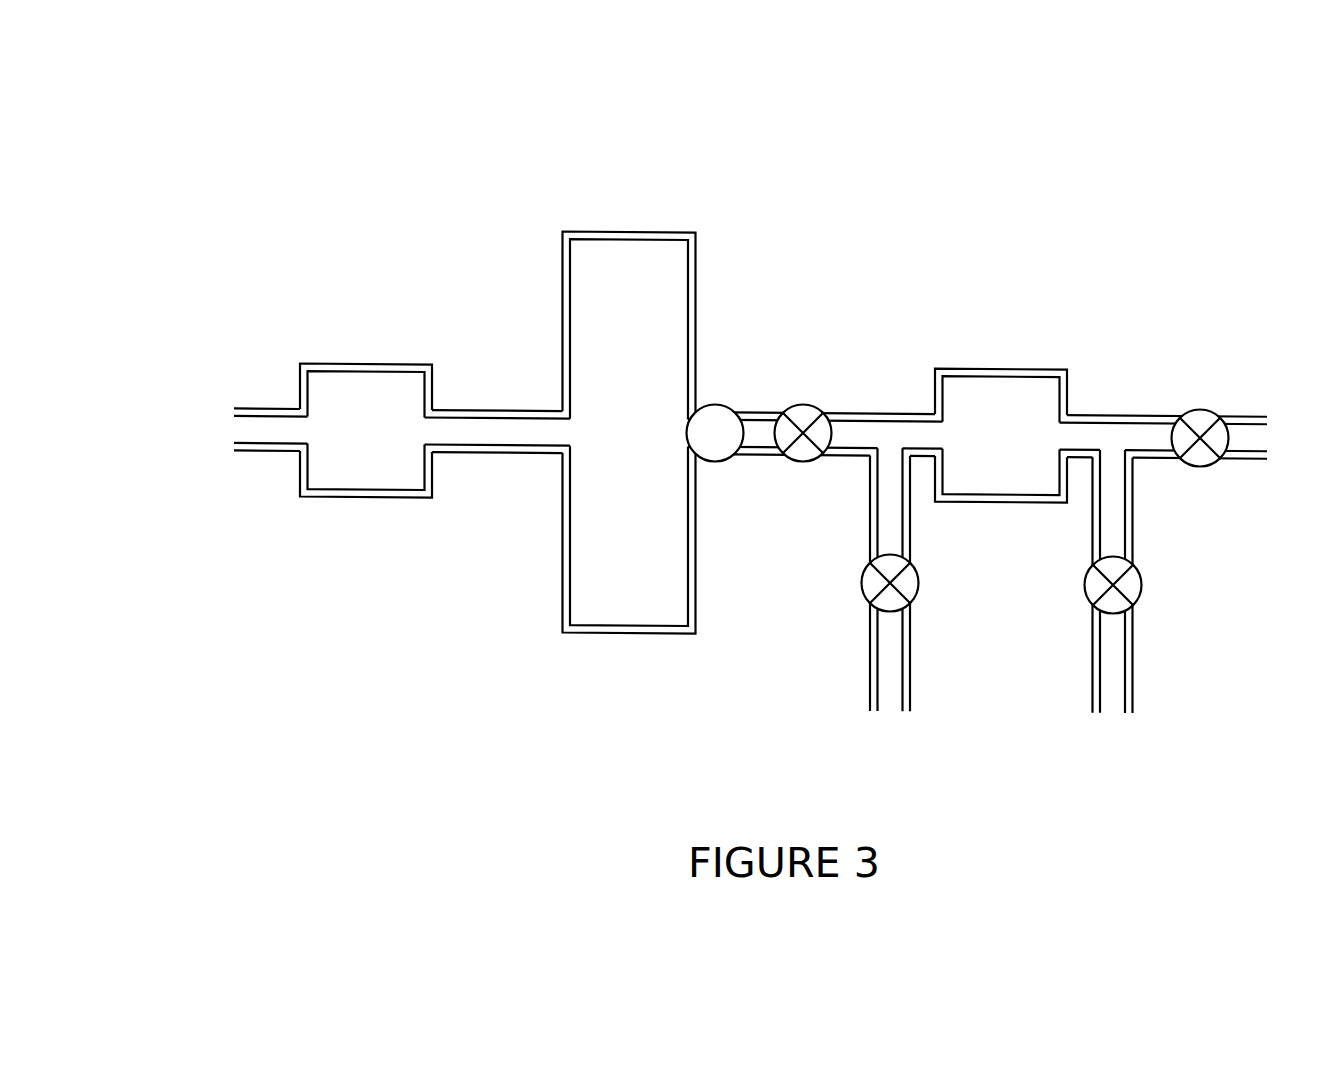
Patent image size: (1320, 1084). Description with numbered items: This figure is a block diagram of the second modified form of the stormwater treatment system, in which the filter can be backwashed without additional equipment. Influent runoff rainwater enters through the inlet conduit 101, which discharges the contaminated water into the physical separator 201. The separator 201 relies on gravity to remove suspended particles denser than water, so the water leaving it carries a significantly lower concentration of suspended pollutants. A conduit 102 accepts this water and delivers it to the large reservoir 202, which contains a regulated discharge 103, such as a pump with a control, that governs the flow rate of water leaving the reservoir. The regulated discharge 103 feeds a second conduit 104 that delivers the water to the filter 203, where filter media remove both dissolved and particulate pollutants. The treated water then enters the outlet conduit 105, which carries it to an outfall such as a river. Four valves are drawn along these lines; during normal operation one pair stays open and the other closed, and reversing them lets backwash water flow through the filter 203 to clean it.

The inlet conduit 101 is at (234, 406).
The conduit 102 is at (497, 453).
The regulated discharge 103 is at (693, 458).
The second conduit 104 is at (750, 405).
The outlet conduit 105 is at (1265, 417).
The physical separator 201 is at (300, 362).
The reservoir 202 is at (563, 230).
The filter 203 is at (935, 367).